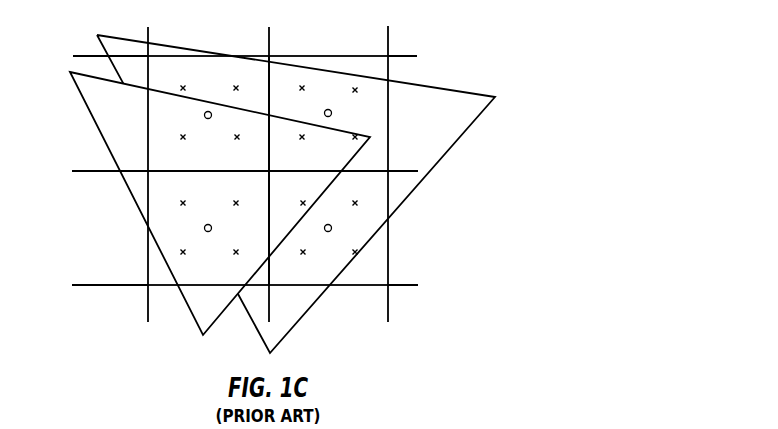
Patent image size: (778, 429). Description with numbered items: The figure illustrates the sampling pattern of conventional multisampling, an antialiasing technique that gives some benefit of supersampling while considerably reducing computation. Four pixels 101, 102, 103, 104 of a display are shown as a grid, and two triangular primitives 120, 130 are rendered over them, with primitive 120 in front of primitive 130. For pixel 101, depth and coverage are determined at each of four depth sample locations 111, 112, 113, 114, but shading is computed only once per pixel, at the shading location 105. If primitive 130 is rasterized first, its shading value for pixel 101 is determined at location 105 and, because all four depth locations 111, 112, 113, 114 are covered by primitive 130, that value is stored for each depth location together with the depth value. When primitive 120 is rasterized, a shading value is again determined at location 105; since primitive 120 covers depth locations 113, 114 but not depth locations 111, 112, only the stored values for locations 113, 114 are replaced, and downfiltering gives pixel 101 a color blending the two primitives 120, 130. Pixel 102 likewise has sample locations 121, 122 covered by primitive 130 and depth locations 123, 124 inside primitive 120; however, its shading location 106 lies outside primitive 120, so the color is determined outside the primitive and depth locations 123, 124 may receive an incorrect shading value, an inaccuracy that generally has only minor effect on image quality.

The pixel 101 is at (257, 165).
The pixel 102 is at (309, 165).
The pixel 103 is at (258, 198).
The pixel 104 is at (310, 198).
The shading location 105 is at (207, 118).
The shading location 106 is at (332, 111).
The depth sample location 111 is at (185, 82).
The depth sample location 112 is at (236, 82).
The depth sample location 113 is at (185, 131).
The depth sample location 114 is at (241, 117).
The sample location 121 is at (304, 92).
The sample location 122 is at (354, 92).
The depth location 123 is at (305, 137).
The depth location 124 is at (357, 117).
The primitive 120 is at (100, 109).
The primitive 130 is at (447, 99).